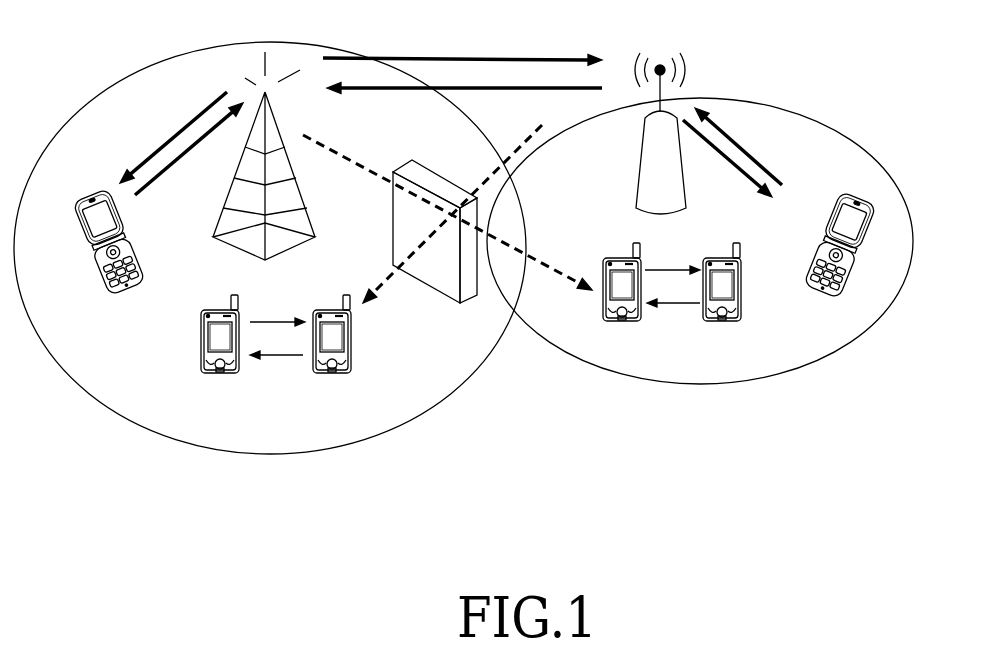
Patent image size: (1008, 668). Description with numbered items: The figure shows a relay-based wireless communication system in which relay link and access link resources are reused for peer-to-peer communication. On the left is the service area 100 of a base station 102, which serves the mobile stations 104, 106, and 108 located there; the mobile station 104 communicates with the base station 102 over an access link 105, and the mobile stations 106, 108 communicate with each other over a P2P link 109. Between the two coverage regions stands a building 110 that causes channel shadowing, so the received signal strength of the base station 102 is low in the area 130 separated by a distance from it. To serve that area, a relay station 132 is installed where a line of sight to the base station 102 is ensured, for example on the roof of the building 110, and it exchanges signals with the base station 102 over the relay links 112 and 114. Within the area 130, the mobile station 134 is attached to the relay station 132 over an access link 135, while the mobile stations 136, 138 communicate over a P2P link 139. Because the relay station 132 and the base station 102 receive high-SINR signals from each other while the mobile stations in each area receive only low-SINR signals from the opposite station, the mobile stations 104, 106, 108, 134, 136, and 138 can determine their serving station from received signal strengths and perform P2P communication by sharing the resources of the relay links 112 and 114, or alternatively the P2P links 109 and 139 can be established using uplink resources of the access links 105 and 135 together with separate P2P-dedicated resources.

The service area of the base station 100 is at (463, 378).
The base station 102 is at (270, 170).
The mobile station 104 is at (113, 263).
The access link 105 is at (174, 116).
The mobile station 106 is at (222, 358).
The mobile station 108 is at (334, 358).
The P2P link 109 is at (302, 401).
The building 110 is at (440, 296).
The relay link 112 is at (385, 48).
The relay link 114 is at (385, 108).
The service area of the relay station 130 is at (770, 108).
The relay station 132 is at (665, 147).
The mobile station 134 is at (820, 259).
The access link 135 is at (758, 148).
The mobile station 136 is at (623, 307).
The mobile station 138 is at (724, 307).
The P2P link 139 is at (724, 338).